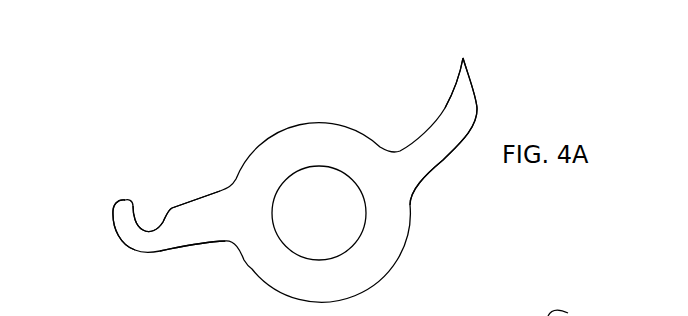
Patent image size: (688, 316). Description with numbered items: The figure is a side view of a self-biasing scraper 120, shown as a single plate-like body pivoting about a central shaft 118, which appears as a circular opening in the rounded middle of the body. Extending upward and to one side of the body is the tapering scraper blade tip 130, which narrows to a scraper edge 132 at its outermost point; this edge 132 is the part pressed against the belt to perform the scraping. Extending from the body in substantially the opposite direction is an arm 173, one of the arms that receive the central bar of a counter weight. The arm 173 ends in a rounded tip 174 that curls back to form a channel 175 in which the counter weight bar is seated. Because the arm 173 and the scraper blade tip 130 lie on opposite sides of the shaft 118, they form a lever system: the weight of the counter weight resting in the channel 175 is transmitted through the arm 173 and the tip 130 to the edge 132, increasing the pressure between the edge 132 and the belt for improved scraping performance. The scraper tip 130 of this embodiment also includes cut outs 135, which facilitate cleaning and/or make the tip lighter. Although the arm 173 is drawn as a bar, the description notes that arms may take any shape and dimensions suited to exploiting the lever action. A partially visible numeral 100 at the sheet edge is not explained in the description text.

The shaft 118 is at (295, 242).
The self-biasing scraper 120 is at (317, 112).
The scraper blade tip 130 is at (443, 137).
The scraper edge 132 is at (464, 57).
The cut outs 135 is at (583, 315).
The arms 173 is at (191, 229).
The rounded tips 174 is at (123, 221).
The channels 175 is at (147, 218).
The tool 100 is at (460, 306).